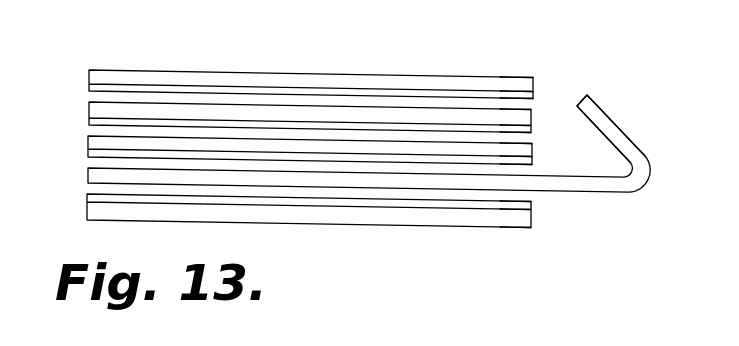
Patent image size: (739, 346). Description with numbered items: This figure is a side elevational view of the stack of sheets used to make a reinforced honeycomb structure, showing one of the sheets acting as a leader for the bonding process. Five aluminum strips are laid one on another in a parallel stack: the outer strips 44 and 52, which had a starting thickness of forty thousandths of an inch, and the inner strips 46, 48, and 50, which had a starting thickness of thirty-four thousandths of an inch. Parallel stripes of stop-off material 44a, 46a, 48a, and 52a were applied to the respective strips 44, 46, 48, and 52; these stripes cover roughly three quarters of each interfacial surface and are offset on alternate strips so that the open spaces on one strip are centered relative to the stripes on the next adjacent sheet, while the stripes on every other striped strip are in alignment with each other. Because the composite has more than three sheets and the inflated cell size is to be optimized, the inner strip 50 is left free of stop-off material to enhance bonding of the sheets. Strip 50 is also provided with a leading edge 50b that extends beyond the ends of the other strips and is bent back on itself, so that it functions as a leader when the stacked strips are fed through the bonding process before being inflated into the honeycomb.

The strip 44 is at (171, 52).
The stripe of stop-off material 44a is at (602, 84).
The strip 46 is at (89, 112).
The stripe of stop-off material 46a is at (599, 139).
The strip 48 is at (88, 150).
The stripe of stop-off material 48a is at (595, 169).
The strip 50 is at (88, 178).
The leading edge 50b is at (664, 125).
The strip 52 is at (87, 210).
The stripe of stop-off material 52a is at (595, 229).